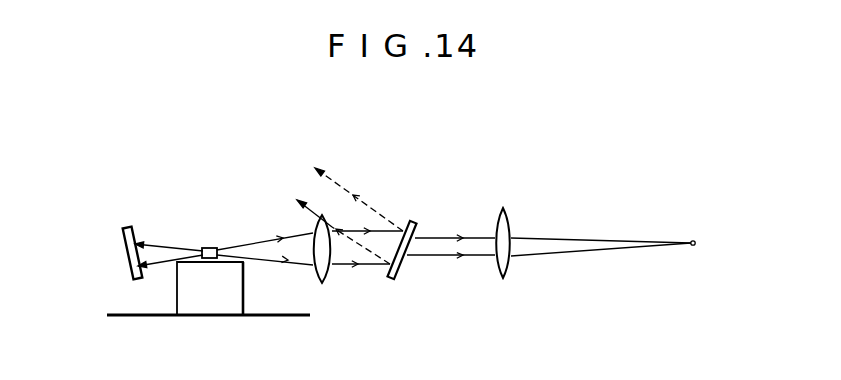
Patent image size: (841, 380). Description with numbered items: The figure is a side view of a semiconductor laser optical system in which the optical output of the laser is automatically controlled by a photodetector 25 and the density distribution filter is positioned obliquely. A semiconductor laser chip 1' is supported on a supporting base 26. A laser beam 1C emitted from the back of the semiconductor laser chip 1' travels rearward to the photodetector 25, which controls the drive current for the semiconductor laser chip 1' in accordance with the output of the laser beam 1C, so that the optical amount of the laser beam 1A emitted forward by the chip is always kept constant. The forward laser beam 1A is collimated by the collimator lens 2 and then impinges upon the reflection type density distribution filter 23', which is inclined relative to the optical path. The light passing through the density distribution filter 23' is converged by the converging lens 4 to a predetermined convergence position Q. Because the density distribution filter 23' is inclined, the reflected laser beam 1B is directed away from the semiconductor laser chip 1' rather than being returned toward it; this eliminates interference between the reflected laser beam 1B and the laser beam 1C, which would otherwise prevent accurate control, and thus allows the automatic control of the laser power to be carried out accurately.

The semiconductor laser chip 1' is at (211, 212).
The laser beam 1A is at (257, 242).
The reflected laser beam 1B is at (362, 200).
The laser beam 1C is at (158, 242).
The collimator lens 2 is at (330, 283).
The converging lens 4 is at (506, 215).
The reflection type density distribution filter 23' is at (423, 229).
The photodetector 25 is at (122, 257).
The supporting base 26 is at (207, 300).
The convergence position Q is at (695, 240).